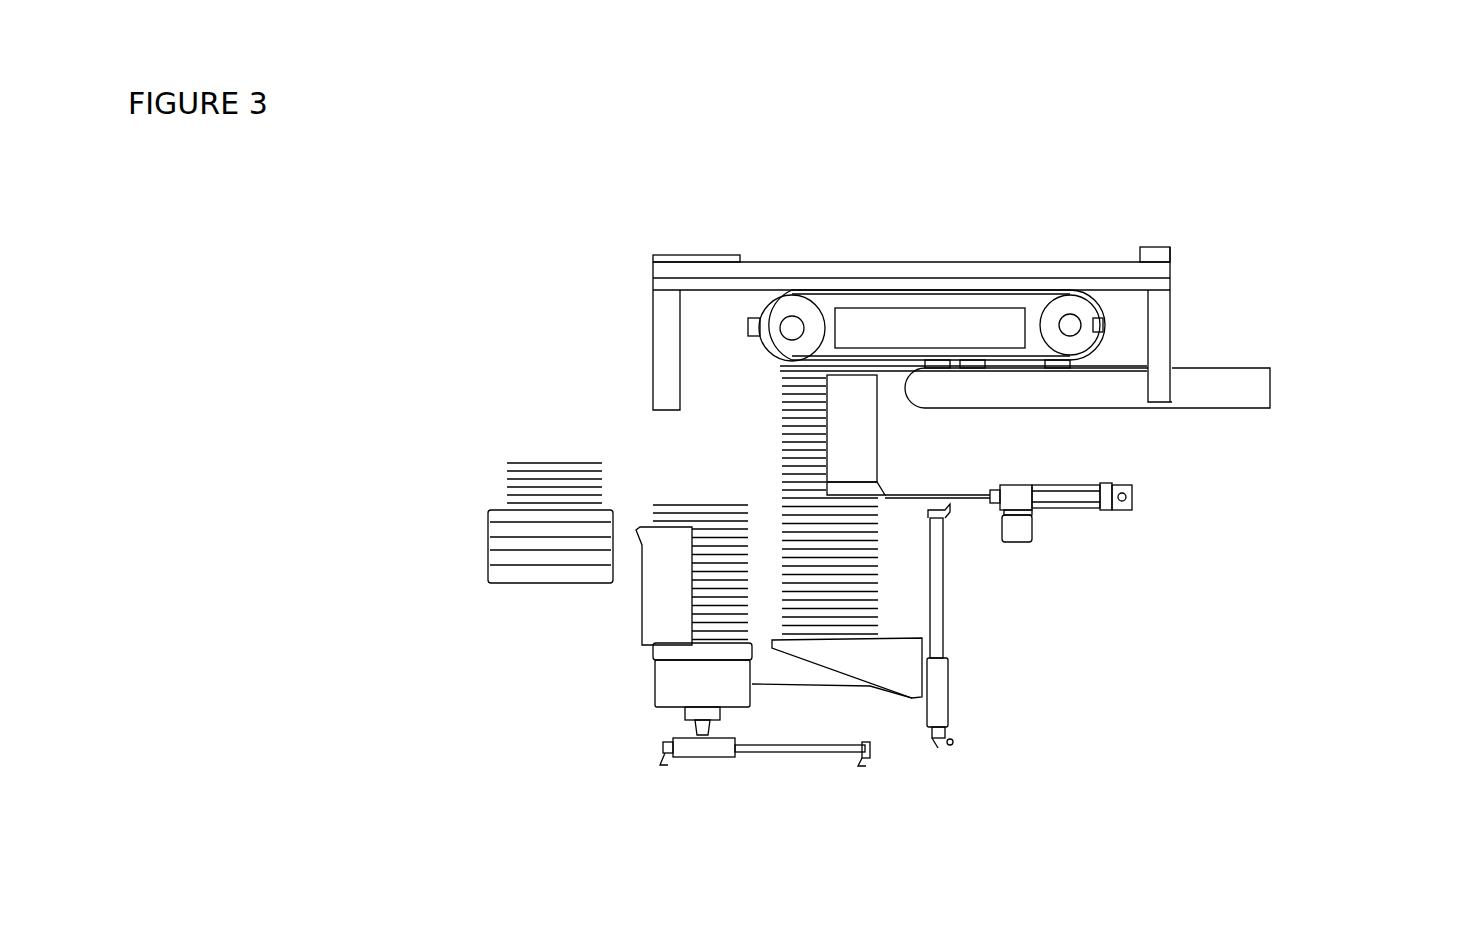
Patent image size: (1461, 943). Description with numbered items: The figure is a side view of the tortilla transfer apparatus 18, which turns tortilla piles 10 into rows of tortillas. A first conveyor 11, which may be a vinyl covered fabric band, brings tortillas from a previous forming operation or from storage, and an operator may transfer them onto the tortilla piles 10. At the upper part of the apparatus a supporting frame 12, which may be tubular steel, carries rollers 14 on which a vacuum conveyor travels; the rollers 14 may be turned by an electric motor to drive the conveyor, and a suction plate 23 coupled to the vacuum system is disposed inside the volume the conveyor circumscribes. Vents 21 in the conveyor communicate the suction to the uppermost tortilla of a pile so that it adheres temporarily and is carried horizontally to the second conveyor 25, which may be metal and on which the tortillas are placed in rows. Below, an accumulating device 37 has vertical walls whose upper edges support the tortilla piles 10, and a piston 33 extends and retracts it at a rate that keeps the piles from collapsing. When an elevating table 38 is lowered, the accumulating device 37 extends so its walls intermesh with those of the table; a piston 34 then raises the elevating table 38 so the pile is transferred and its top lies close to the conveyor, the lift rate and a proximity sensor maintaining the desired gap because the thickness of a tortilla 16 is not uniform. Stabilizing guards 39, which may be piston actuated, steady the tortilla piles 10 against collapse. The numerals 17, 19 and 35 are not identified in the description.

The tortilla piles 10 is at (537, 450).
The first conveyor 11 is at (520, 553).
The supporting frame 12 is at (680, 237).
The rollers 14 is at (795, 318).
The tortilla 16 is at (849, 362).
The left support leg 17 is at (640, 327).
The tortilla transfer apparatus 18 is at (1257, 137).
The right support leg 19 is at (1163, 338).
The vents 21 is at (937, 360).
The suction plate 23 is at (913, 322).
The second conveyor 25 is at (1225, 377).
The piston 33 is at (716, 760).
The piston 34 is at (960, 684).
The side actuator 35 is at (1128, 507).
The accumulating device 37 is at (672, 690).
The elevating table 38 is at (879, 668).
The stabilizing guard 39 is at (850, 430).